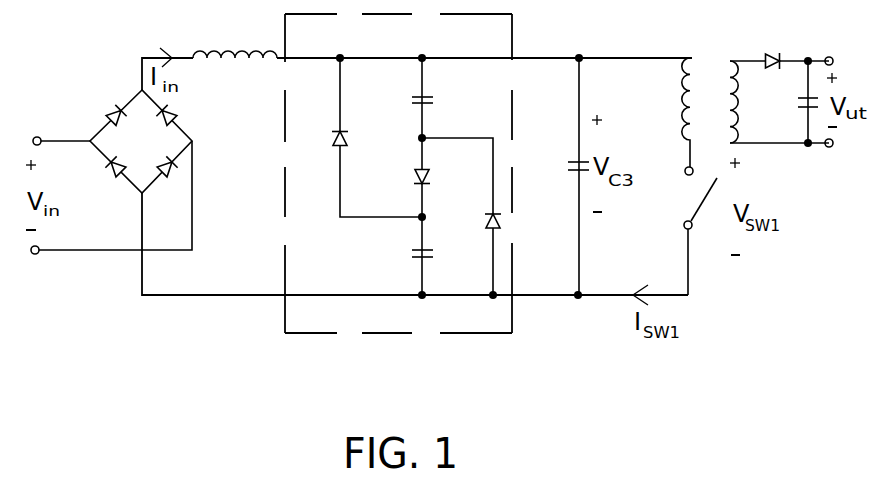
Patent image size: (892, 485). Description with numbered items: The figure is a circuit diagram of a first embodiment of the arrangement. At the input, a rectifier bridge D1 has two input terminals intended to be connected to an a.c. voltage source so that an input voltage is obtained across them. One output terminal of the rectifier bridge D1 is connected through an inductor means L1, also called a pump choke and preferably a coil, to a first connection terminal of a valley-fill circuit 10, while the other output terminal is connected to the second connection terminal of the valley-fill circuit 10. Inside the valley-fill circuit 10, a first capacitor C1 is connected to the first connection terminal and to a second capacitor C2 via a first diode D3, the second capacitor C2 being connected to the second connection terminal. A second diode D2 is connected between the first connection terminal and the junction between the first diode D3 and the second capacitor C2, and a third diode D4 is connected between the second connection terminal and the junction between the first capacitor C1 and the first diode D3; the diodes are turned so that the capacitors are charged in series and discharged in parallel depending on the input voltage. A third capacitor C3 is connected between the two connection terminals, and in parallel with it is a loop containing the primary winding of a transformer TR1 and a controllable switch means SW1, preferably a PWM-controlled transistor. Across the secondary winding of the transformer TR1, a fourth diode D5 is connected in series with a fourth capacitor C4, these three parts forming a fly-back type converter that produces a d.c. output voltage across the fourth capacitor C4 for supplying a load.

The valley-fill circuit 10 is at (512, 333).
The rectifier bridge D1 is at (157, 146).
The inductor means L1 is at (235, 72).
The second diode D2 is at (358, 137).
The first capacitor C1 is at (408, 98).
The first diode D3 is at (404, 177).
The second capacitor C2 is at (405, 256).
The third diode D4 is at (461, 216).
The third capacitor C3 is at (563, 176).
The transformer TR1 is at (710, 102).
The controllable switch means SW1 is at (682, 231).
The fourth diode D5 is at (781, 46).
The fourth capacitor C4 is at (781, 104).